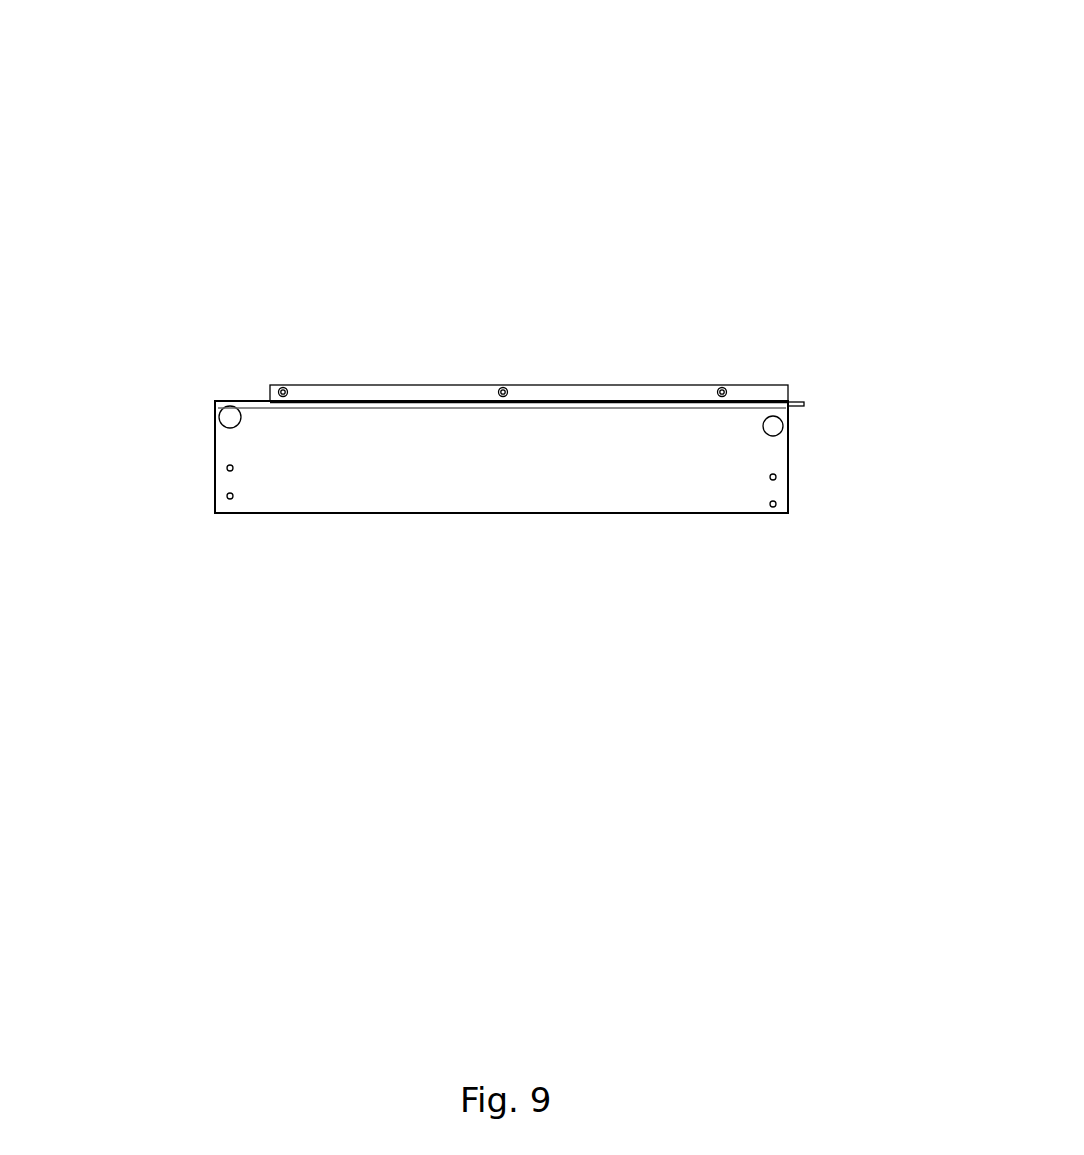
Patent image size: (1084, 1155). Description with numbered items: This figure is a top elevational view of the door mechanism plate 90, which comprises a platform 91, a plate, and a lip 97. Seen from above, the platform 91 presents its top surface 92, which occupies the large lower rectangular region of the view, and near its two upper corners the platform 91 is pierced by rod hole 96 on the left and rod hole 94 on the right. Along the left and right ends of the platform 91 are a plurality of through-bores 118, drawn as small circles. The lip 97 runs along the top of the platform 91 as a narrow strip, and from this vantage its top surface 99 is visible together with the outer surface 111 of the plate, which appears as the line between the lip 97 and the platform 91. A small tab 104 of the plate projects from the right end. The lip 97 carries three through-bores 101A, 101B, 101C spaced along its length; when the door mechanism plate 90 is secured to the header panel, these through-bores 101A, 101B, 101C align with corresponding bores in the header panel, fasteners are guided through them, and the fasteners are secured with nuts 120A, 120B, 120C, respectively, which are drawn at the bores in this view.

The door mechanism plate 90 is at (661, 90).
The through-bores 118 is at (218, 494).
The platform 91 is at (592, 470).
The top surface 92 is at (458, 490).
The rod hole 96 is at (231, 416).
The rod hole 94 is at (773, 426).
The lip 97 is at (380, 394).
The outer surface 111 is at (622, 400).
The top surface 99 is at (414, 393).
The through-bore 101A is at (283, 392).
The nut 120A is at (283, 392).
The through-bore 101B is at (503, 392).
The nut 120B is at (503, 392).
The through-bore 101C is at (722, 392).
The nut 120C is at (722, 392).
The tab 104 is at (804, 404).